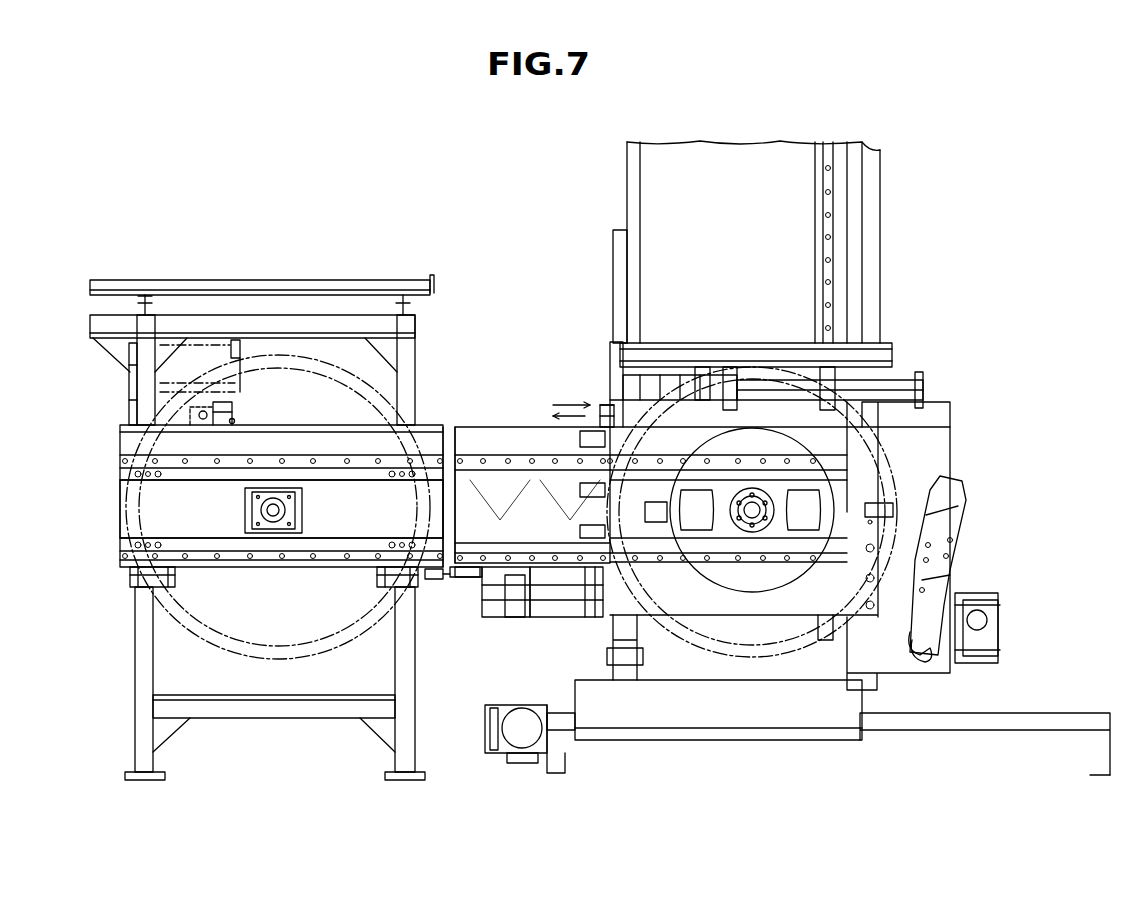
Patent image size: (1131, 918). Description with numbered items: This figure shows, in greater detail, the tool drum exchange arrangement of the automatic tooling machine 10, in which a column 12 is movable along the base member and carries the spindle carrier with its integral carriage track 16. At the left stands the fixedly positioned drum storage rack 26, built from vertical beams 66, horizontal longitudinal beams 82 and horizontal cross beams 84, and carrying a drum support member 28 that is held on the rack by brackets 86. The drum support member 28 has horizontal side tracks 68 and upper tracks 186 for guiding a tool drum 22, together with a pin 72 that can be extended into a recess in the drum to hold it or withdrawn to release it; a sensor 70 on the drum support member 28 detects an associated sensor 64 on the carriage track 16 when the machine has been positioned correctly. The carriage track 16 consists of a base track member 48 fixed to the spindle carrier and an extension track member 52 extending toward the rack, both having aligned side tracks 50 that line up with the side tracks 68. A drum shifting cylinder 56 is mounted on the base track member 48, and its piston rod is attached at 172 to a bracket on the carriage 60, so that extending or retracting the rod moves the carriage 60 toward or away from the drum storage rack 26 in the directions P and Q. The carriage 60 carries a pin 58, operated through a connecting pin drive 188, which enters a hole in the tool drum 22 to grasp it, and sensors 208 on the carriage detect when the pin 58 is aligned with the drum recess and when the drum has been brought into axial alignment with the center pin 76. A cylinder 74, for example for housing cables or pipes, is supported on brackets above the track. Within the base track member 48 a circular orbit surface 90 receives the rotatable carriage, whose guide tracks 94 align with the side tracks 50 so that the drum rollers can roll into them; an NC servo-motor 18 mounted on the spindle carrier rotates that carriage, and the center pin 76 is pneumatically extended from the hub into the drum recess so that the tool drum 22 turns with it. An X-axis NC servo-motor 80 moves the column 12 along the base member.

The automatic tooling machine 10 is at (933, 227).
The column 12 is at (807, 193).
The carriage track 16 is at (498, 423).
The NC servo-motor 18 is at (548, 617).
The tool drum 22 is at (415, 352).
The drum storage rack 26 is at (130, 398).
The drum support member 28 is at (188, 517).
The base track member 48 is at (660, 523).
The side tracks 50 is at (492, 617).
The extension track member 52 is at (523, 503).
The drum shifting cylinder 56 is at (895, 385).
The pin 58 is at (230, 412).
The carriage 60 is at (205, 415).
The sensor 64 is at (462, 578).
The vertical beams 66 is at (407, 382).
The side tracks 68 is at (307, 440).
The sensor 70 is at (400, 585).
The pin 72 is at (273, 530).
The cylinder 74 is at (672, 352).
The center pin 76 is at (757, 522).
The X-axis NC servo-motor 80 is at (530, 730).
The horizontal longitudinal beams 82 is at (147, 325).
The horizontal cross beams 84 is at (245, 323).
The brackets 86 is at (137, 585).
The orbit surface 90 is at (886, 481).
The guide tracks 94 is at (728, 560).
The piston rod attachment 172 is at (182, 385).
The upper tracks 186 is at (430, 426).
The connecting pin drive 188 is at (740, 362).
The sensor 208 is at (606, 420).